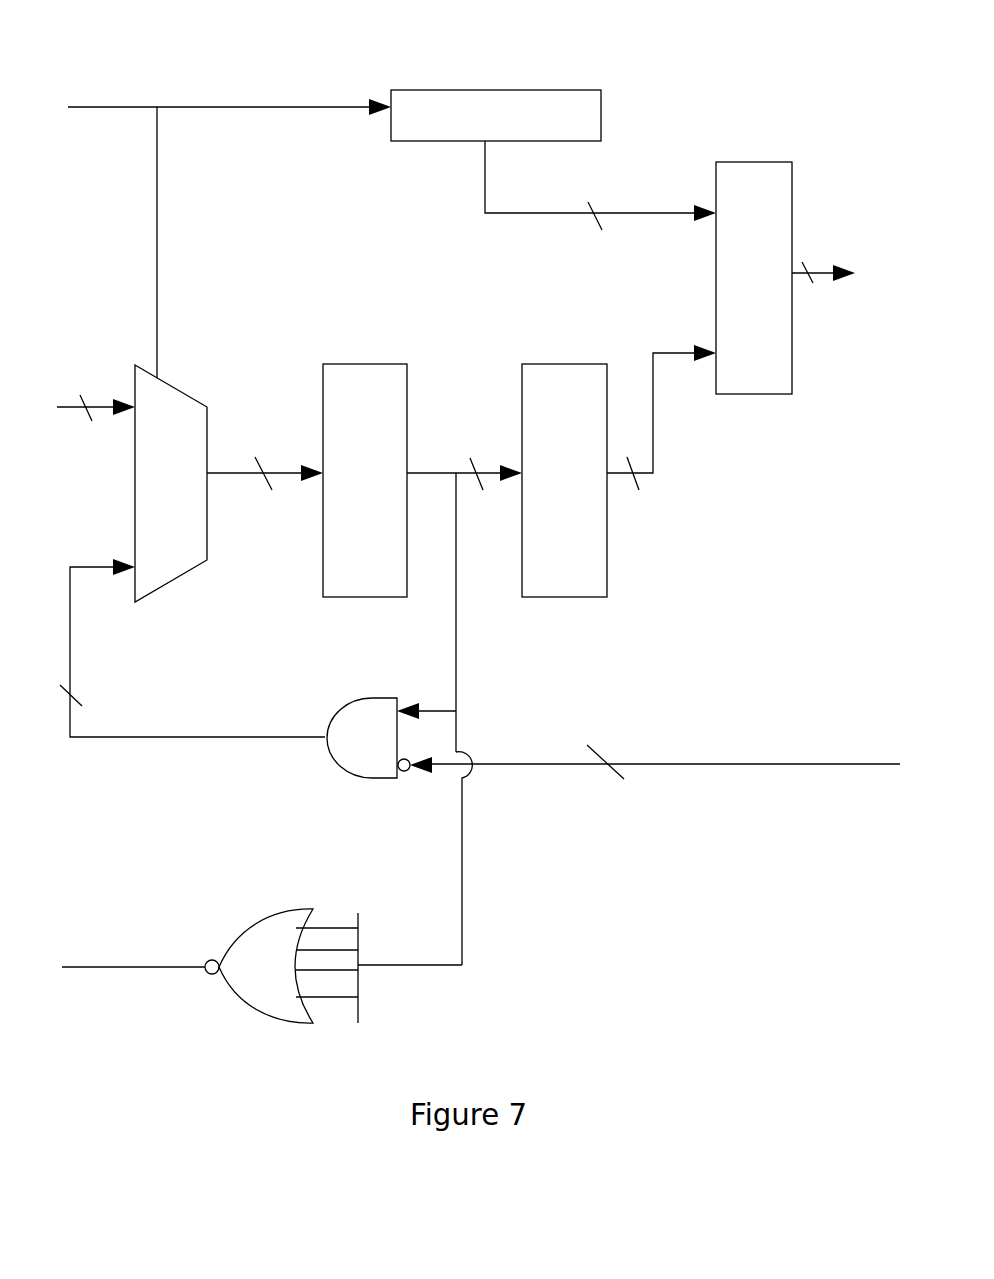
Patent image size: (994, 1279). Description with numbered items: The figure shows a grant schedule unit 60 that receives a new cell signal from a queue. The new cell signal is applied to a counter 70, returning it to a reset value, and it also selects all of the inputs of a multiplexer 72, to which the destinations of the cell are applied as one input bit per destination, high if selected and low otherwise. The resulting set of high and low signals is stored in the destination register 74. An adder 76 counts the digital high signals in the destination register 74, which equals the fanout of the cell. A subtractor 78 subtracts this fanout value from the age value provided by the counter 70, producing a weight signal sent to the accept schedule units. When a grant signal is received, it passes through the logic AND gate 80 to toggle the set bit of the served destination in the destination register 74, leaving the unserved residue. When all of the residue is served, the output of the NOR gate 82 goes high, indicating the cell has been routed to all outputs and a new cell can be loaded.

The grant schedule unit 60 is at (471, 517).
The counter 70 is at (503, 97).
The multiplexer 72 is at (188, 474).
The destination register 74 is at (365, 456).
The adder 76 is at (564, 456).
The subtractor 78 is at (754, 256).
The logic AND gate 80 is at (368, 721).
The NOR gate 82 is at (281, 942).